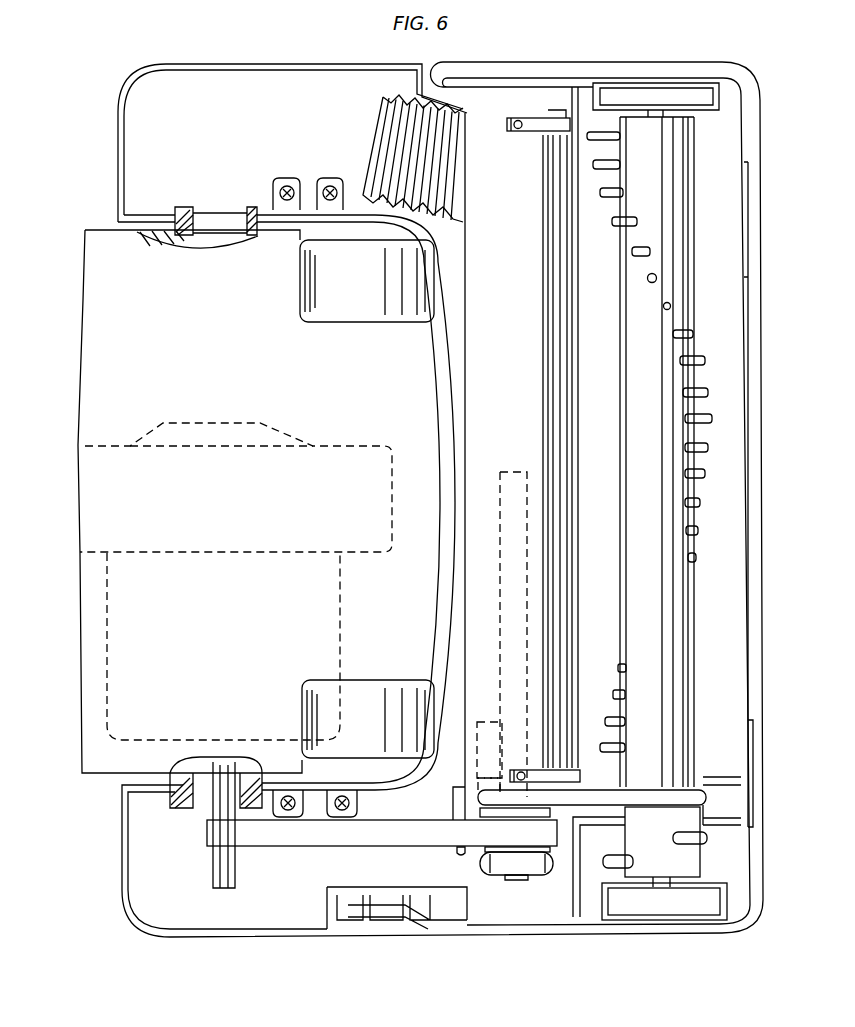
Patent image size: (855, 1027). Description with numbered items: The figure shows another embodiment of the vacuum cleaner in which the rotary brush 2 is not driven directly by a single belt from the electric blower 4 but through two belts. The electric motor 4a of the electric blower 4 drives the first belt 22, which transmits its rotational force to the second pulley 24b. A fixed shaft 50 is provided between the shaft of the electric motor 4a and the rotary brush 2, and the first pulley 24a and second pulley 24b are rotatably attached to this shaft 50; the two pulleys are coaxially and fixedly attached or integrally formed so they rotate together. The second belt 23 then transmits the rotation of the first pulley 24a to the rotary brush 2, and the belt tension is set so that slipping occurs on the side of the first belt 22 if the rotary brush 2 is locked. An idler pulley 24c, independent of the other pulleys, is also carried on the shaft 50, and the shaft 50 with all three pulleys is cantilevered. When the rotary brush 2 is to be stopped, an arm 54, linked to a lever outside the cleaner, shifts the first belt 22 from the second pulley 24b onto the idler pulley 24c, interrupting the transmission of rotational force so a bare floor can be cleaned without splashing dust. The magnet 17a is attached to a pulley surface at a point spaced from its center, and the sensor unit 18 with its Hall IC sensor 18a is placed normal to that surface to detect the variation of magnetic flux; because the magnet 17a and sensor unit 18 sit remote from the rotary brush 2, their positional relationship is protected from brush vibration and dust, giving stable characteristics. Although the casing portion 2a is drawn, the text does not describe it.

The rotary brush 2 is at (693, 618).
The casing bottom portion 2a is at (713, 800).
The electric blower 4 is at (75, 567).
The electric motor 4a is at (120, 742).
The magnet 17a is at (555, 798).
The sensor unit 18 is at (490, 722).
The sensor 18a is at (480, 783).
The first belt 22 is at (290, 836).
The second belt 23 is at (684, 792).
The first pulley 24a is at (556, 810).
The second pulley 24b is at (490, 860).
The idler pulley 24c is at (542, 870).
The fixed shaft 50 is at (512, 468).
The arm 54 is at (455, 858).